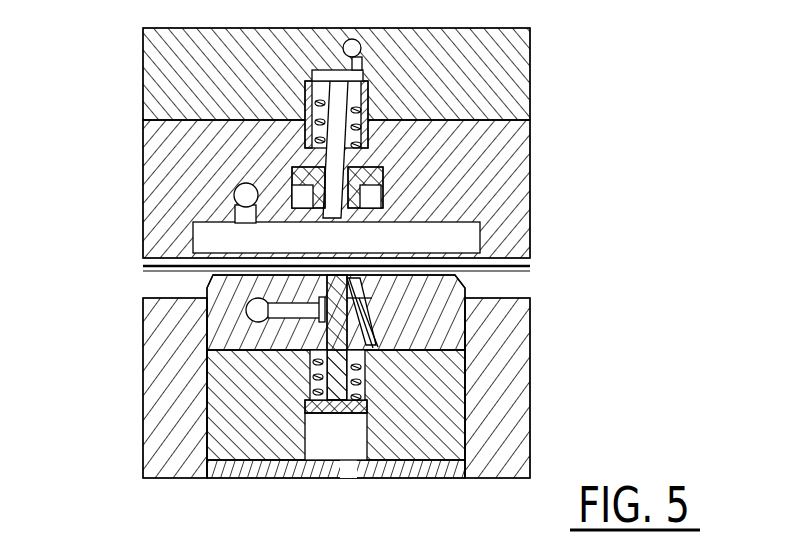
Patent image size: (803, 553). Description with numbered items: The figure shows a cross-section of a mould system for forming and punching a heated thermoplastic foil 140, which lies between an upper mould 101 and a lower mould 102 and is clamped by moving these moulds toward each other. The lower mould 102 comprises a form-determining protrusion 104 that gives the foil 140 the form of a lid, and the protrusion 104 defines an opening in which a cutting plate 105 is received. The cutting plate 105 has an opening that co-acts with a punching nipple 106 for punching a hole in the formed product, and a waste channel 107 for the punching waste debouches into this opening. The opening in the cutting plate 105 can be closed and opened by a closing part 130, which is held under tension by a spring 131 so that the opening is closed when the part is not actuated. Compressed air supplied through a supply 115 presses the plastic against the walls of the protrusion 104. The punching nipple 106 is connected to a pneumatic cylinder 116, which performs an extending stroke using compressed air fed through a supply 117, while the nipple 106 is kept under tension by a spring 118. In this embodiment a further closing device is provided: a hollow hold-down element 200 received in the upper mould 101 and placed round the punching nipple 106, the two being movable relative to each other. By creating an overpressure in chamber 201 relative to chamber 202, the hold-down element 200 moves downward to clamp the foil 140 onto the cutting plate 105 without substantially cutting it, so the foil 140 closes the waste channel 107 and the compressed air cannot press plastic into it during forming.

The upper mould 101 is at (363, 140).
The lower mould 102 is at (363, 373).
The protrusion 104 is at (225, 277).
The cutting plate 105 is at (258, 310).
The punching nipple 106 is at (335, 163).
The waste channel 107 is at (297, 312).
The supply 115 is at (246, 195).
The pneumatic cylinder 116 is at (316, 60).
The supply 117 is at (361, 48).
The spring 118 is at (365, 108).
The closing part 130 is at (314, 358).
The spring 131 is at (367, 380).
The thermoplastic foil 140 is at (500, 272).
The hold-down element 200 is at (388, 170).
The chamber 201 is at (372, 172).
The chamber 202 is at (376, 198).